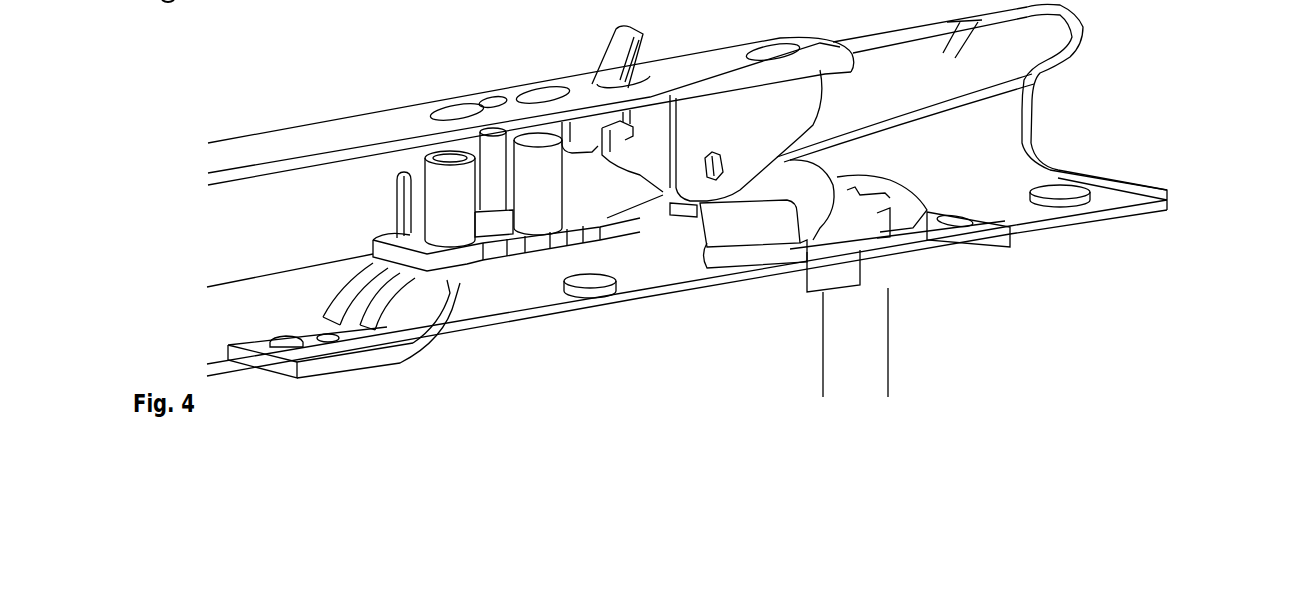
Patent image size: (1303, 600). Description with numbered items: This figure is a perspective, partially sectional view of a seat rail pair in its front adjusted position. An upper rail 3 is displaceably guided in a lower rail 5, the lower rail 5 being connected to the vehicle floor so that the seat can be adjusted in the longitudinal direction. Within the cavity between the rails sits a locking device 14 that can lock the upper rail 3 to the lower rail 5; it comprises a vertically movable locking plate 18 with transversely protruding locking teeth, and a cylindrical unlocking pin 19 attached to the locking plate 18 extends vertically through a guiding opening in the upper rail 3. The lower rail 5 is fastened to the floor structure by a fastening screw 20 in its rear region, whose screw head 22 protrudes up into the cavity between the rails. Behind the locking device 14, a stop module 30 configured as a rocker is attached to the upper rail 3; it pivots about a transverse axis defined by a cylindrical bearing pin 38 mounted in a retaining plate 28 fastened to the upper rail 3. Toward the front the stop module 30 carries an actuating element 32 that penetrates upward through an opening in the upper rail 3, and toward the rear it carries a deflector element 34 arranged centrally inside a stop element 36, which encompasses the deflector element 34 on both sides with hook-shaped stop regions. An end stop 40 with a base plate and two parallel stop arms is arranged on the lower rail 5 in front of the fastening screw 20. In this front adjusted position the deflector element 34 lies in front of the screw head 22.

The upper rail 3 is at (277, 152).
The lower rail 5 is at (1013, 180).
The locking device 14 is at (448, 180).
The locking plate 18 is at (403, 255).
The unlocking pin 19 is at (497, 167).
The fastening screw 20 is at (860, 323).
The screw head 22 is at (892, 207).
The retaining plate 28 is at (775, 102).
The stop module 30 is at (655, 142).
The actuating element 32 is at (610, 58).
The deflector element 34 is at (765, 230).
The stop element 36 is at (802, 230).
The bearing pin 38 is at (705, 172).
The end stop 40 is at (313, 338).